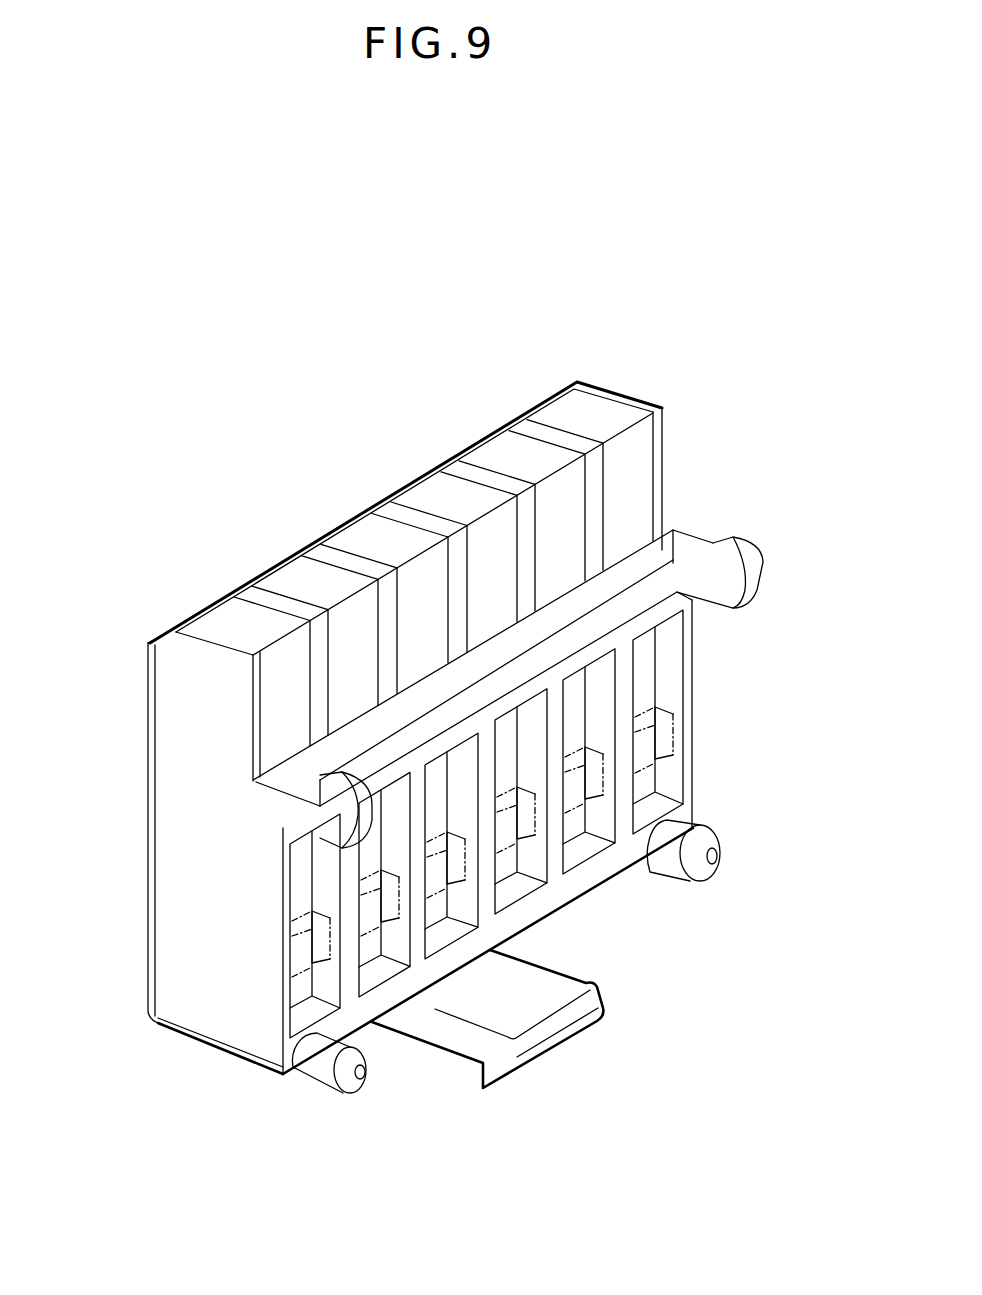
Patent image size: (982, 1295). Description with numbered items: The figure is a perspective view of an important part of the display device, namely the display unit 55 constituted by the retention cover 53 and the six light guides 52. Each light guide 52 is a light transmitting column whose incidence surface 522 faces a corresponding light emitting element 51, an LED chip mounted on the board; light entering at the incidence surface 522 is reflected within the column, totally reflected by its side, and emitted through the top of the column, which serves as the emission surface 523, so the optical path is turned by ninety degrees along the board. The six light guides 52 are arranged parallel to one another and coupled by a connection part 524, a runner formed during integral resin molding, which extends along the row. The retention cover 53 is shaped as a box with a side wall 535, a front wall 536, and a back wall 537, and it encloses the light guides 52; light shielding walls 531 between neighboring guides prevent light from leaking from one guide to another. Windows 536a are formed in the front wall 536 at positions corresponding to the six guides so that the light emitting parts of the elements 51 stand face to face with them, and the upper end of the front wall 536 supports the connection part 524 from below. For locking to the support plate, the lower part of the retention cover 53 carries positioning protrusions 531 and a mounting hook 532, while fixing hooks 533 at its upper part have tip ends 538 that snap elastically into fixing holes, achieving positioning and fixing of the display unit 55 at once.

The light emitting element 51 is at (650, 745).
The light guide 52 is at (640, 440).
The retention cover 53 is at (130, 672).
The display unit 55 is at (392, 452).
The incidence surface 522 is at (653, 730).
The emission surface 523 is at (593, 410).
The connection part 524 is at (630, 562).
The light shielding wall 531 is at (556, 435).
The mounting hook 532 is at (442, 1040).
The fixing hook 533 is at (300, 820).
The side wall 535 is at (645, 405).
The front wall 536 is at (673, 640).
The window 536a is at (653, 683).
The back wall 537 is at (213, 600).
The tip end 538 is at (735, 555).